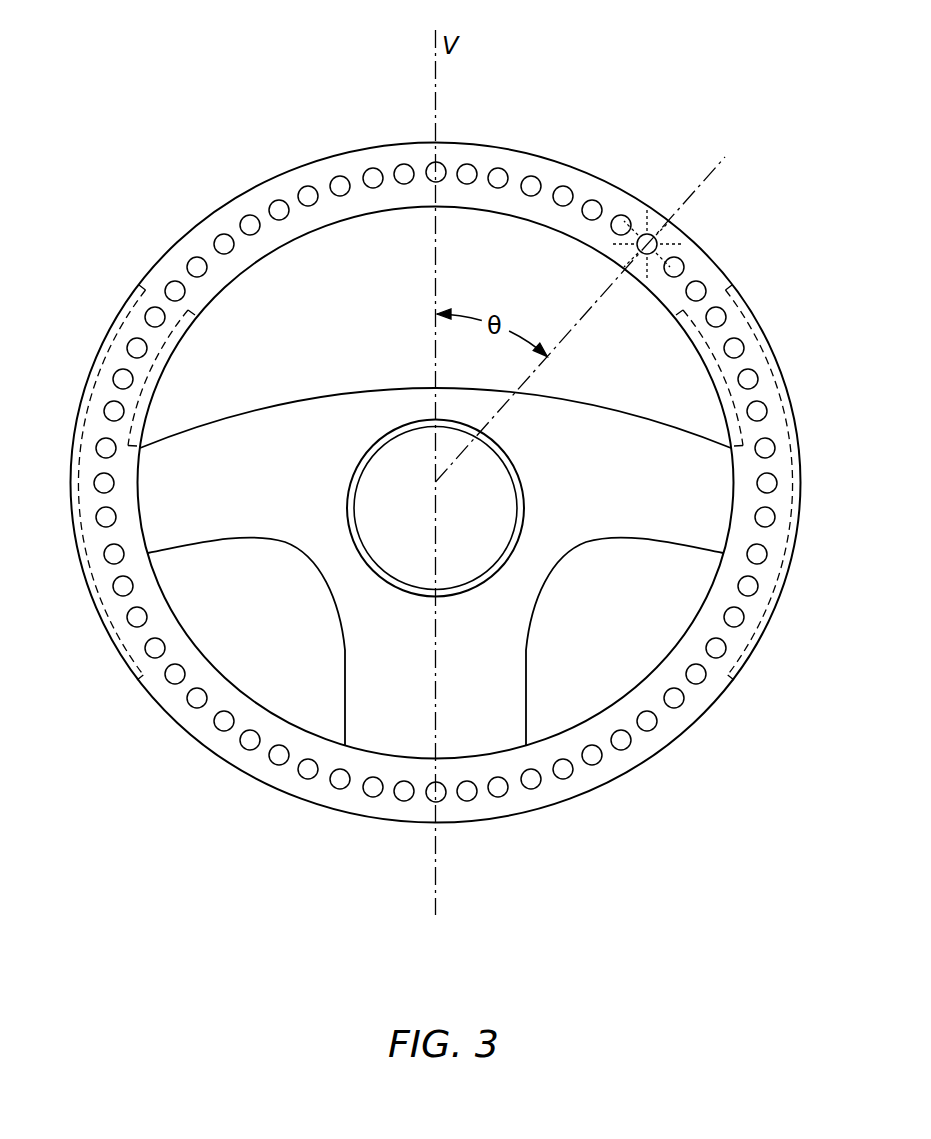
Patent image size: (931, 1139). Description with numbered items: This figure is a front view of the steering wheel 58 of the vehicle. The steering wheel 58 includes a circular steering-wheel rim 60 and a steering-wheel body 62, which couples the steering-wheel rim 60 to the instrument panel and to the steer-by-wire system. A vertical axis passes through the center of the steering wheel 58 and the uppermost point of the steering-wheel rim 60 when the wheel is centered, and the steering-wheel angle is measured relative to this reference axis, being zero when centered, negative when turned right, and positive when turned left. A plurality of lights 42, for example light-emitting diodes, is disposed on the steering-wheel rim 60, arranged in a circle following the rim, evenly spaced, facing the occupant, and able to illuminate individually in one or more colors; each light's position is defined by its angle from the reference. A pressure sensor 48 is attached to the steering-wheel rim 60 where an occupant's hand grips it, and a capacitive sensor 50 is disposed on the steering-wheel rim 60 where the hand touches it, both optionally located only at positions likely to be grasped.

The plurality of lights 42 is at (648, 233).
The pressure sensor 48 is at (145, 288).
The capacitive sensor 50 is at (190, 309).
The steering wheel 58 is at (436, 452).
The steering-wheel rim 60 is at (357, 149).
The steering-wheel body 62 is at (363, 391).